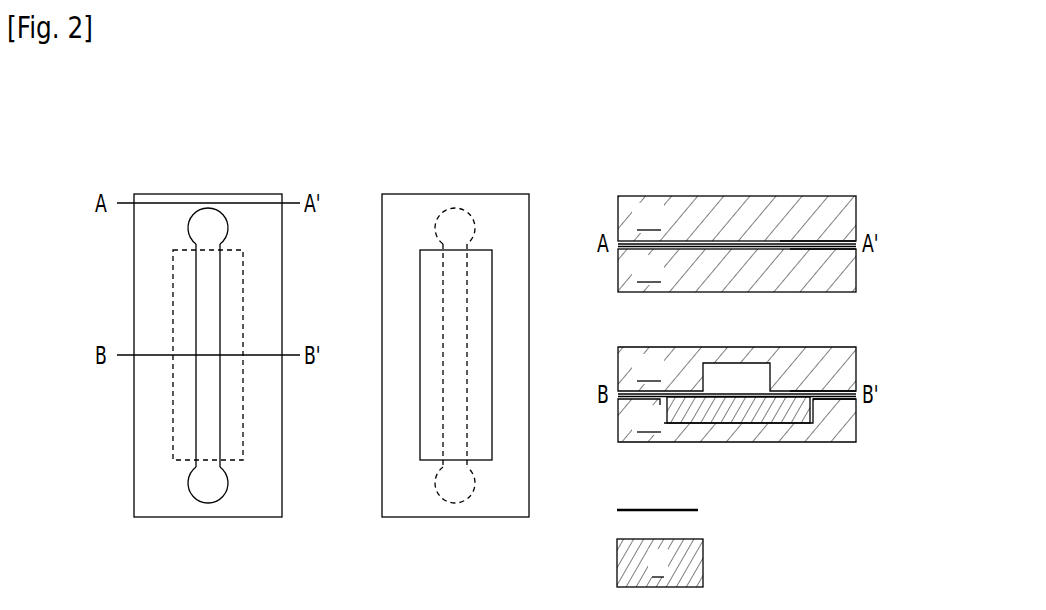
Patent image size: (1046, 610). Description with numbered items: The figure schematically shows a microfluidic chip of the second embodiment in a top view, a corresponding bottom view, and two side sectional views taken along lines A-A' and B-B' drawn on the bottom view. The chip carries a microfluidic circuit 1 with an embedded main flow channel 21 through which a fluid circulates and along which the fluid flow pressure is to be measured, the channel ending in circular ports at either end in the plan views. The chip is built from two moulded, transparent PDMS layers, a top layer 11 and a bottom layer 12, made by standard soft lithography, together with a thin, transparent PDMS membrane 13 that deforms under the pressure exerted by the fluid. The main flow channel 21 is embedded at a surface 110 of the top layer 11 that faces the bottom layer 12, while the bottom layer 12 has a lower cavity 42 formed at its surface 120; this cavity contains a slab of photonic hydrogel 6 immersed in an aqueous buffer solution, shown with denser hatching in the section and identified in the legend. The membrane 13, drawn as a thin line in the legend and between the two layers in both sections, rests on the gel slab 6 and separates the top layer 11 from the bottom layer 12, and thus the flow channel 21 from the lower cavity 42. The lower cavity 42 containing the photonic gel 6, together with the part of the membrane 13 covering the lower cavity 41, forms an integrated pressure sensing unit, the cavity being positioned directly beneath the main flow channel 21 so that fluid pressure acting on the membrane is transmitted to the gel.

The microfluidic circuit 1 is at (172, 172).
The main flow channel 21 is at (205, 291).
The lower cavity 41 is at (210, 481).
The lower cavity 42 is at (185, 443).
The top layer 11 is at (737, 290).
The bottom layer 12 is at (737, 342).
The membrane 13 is at (853, 245).
The surface of the top layer 110 is at (800, 241).
The surface of the bottom layer 120 is at (815, 249).
The photonic hydrogel 6 is at (752, 415).